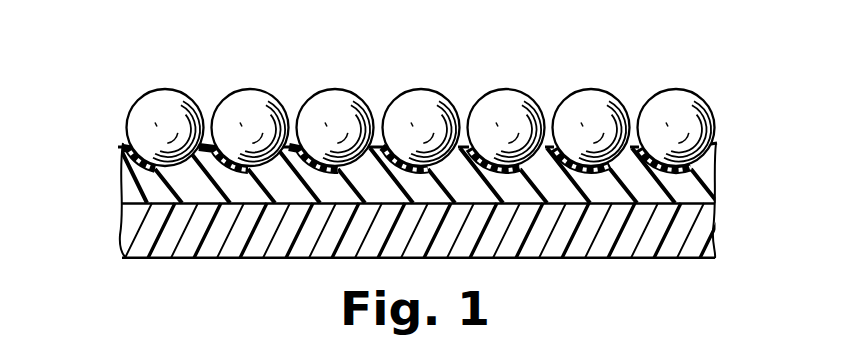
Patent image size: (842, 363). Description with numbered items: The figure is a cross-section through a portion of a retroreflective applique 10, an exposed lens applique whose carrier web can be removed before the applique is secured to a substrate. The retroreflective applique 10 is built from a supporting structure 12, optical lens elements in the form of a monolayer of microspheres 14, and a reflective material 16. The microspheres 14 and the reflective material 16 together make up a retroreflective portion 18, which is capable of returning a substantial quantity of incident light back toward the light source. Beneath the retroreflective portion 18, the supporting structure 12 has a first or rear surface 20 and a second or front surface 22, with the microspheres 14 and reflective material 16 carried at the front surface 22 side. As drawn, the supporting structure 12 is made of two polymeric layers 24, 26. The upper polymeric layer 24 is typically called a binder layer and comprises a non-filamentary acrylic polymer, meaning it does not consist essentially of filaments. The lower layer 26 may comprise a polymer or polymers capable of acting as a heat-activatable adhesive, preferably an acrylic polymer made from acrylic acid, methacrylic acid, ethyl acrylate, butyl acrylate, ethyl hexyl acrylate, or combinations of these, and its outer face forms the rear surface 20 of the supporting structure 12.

The retroreflective applique 10 is at (427, 165).
The supporting structure 12 is at (427, 232).
The microspheres 14 is at (317, 107).
The reflective material 16 is at (125, 155).
The retroreflective portion 18 is at (423, 102).
The rear surface 20 is at (663, 258).
The front surface 22 is at (547, 145).
The binder layer 24 is at (147, 186).
The heat-activatable adhesive layer 26 is at (157, 233).